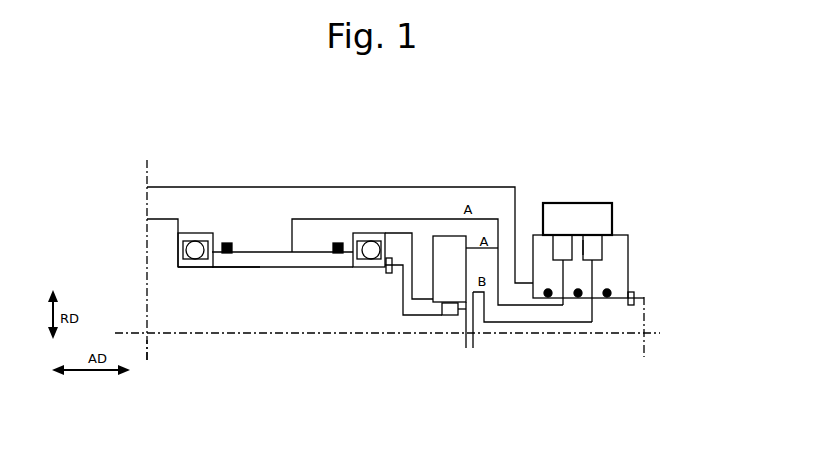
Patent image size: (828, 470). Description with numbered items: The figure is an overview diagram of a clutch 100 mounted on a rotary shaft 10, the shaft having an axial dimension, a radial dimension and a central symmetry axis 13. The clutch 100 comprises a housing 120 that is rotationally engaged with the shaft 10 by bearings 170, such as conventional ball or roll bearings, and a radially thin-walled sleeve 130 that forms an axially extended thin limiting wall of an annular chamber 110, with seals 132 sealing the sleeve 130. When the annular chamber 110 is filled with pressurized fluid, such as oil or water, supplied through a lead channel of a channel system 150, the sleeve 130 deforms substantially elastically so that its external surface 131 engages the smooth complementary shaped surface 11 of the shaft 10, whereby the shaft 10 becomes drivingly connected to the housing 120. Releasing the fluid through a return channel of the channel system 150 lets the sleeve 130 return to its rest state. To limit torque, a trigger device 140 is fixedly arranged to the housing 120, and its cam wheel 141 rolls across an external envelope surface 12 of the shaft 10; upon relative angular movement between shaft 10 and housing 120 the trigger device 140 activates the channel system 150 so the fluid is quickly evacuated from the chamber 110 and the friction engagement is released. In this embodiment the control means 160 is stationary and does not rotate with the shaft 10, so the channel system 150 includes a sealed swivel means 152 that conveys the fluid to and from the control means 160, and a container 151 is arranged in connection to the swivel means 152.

The clutch 100 is at (120, 138).
The rotary shaft 10 is at (165, 350).
The complementary shaped surface 11 is at (238, 268).
The envelope surface 12 is at (437, 317).
The central symmetry axis 13 is at (653, 321).
The annular chamber 110 is at (263, 250).
The housing 120 is at (210, 205).
The sleeve 130 is at (275, 258).
The external surface 131 is at (257, 267).
The seals 132 is at (227, 243).
The trigger device 140 is at (512, 292).
The cam wheel 141 is at (447, 317).
The channel system 150 is at (513, 208).
The container 151 is at (593, 248).
The swivel means 152 is at (563, 233).
The control means 160 is at (608, 232).
The bearings 170 is at (193, 253).